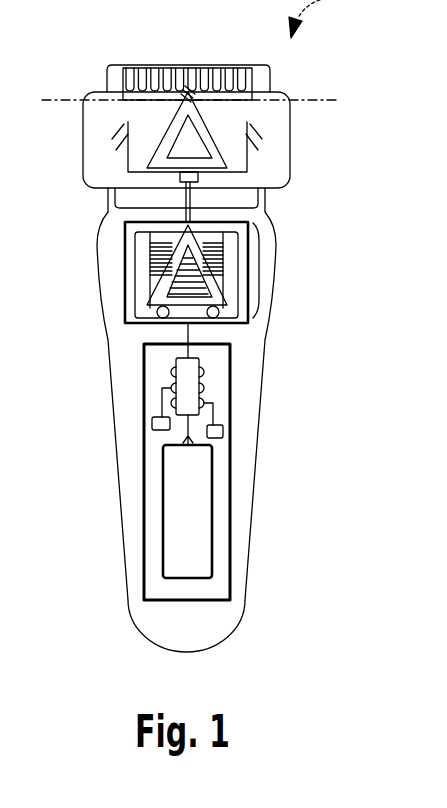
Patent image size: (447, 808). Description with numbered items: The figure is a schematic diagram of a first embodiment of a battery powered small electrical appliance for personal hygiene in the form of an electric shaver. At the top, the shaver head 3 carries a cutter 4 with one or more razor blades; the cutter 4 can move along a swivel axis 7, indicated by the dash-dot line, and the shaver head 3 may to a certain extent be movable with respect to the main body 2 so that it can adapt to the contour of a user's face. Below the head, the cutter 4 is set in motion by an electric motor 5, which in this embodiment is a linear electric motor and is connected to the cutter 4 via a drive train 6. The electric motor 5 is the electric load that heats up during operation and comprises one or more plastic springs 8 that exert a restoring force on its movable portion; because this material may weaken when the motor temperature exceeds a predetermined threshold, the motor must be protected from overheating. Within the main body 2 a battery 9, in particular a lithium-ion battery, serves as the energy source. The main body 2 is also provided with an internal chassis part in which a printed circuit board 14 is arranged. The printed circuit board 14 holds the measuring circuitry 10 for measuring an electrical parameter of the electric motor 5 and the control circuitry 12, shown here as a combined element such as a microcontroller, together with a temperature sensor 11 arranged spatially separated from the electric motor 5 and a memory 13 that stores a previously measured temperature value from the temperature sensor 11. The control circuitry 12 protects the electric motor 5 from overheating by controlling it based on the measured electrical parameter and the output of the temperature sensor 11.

The main body 2 is at (122, 360).
The shaver head 3 is at (104, 134).
The cutter 4 is at (252, 73).
The electric motor 5 is at (263, 265).
The drive train 6 is at (222, 160).
The swivel axis 7 is at (46, 100).
The plastic springs 8 is at (133, 268).
The battery 9 is at (195, 507).
The measuring circuitry 10 is at (275, 401).
The control circuitry 12 is at (190, 380).
The temperature sensor 11 is at (215, 430).
The memory 13 is at (158, 423).
The printed circuit board 14 is at (218, 352).